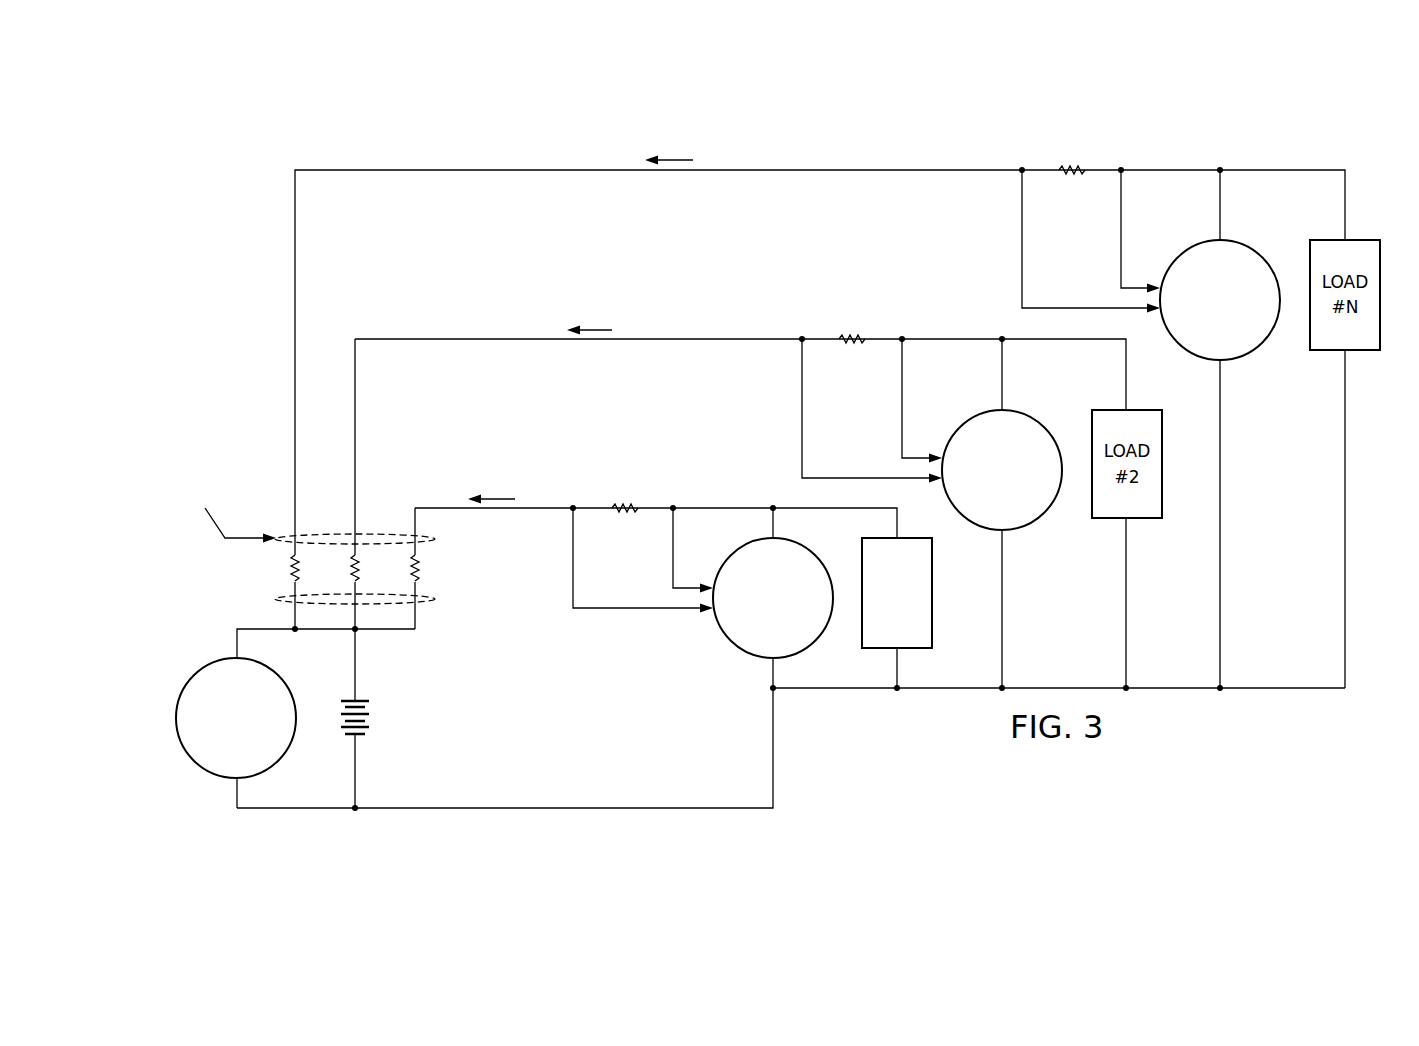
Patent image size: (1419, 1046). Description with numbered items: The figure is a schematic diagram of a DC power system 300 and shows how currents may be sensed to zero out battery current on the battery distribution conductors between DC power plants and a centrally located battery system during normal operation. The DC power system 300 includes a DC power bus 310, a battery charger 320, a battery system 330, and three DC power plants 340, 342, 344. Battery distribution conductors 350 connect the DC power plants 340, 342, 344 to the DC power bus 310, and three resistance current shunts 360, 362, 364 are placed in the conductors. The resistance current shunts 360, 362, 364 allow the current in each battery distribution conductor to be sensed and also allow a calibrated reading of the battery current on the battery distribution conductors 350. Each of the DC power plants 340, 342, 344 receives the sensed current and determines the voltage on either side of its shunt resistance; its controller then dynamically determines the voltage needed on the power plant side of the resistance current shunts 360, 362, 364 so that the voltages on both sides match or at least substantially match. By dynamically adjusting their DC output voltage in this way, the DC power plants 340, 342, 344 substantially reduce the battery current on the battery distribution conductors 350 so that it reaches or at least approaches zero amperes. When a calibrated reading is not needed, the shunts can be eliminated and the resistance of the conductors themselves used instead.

The DC power system 300 is at (318, 148).
The DC power bus 310 is at (237, 645).
The battery charger 320 is at (194, 763).
The battery system 330 is at (373, 716).
The DC power plant 340 is at (730, 643).
The DC power plant 342 is at (1046, 515).
The DC power plant 344 is at (1266, 343).
The battery distribution conductors 350 is at (440, 598).
The resistance current shunt 360 is at (600, 456).
The resistance current shunt 362 is at (826, 283).
The resistance current shunt 364 is at (1087, 128).